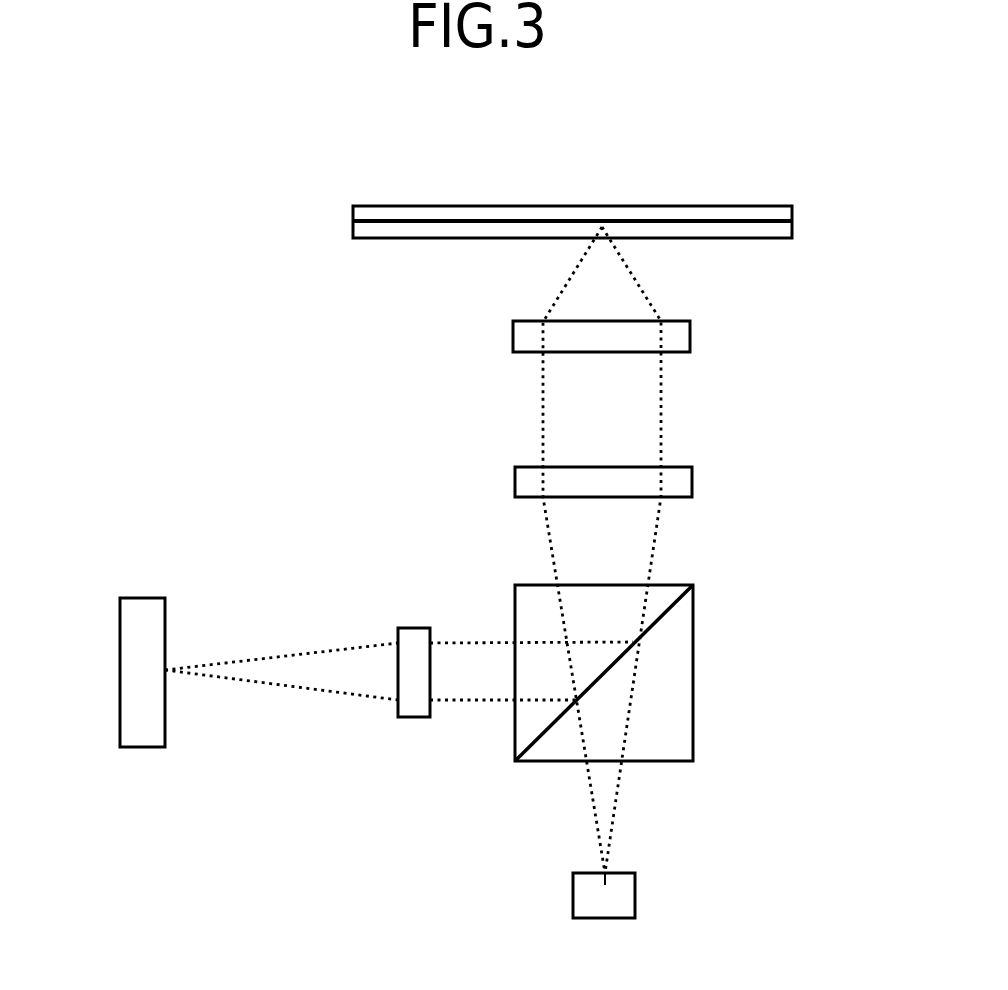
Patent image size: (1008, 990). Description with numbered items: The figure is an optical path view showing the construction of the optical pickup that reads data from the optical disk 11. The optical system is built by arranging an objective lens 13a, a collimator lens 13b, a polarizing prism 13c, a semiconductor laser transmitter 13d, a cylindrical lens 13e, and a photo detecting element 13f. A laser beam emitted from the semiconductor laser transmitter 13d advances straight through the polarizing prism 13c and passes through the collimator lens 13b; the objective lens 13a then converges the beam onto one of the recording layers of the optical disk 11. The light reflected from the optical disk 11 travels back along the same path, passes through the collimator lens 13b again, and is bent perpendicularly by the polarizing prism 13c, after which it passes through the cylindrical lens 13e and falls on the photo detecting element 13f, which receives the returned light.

The optical disk 11 is at (763, 205).
The objective lens 13a is at (690, 333).
The collimator lens 13b is at (692, 477).
The polarizing prism 13c is at (693, 652).
The semiconductor laser transmitter 13d is at (635, 897).
The cylindrical lens 13e is at (412, 628).
The photo detecting element 13f is at (148, 598).